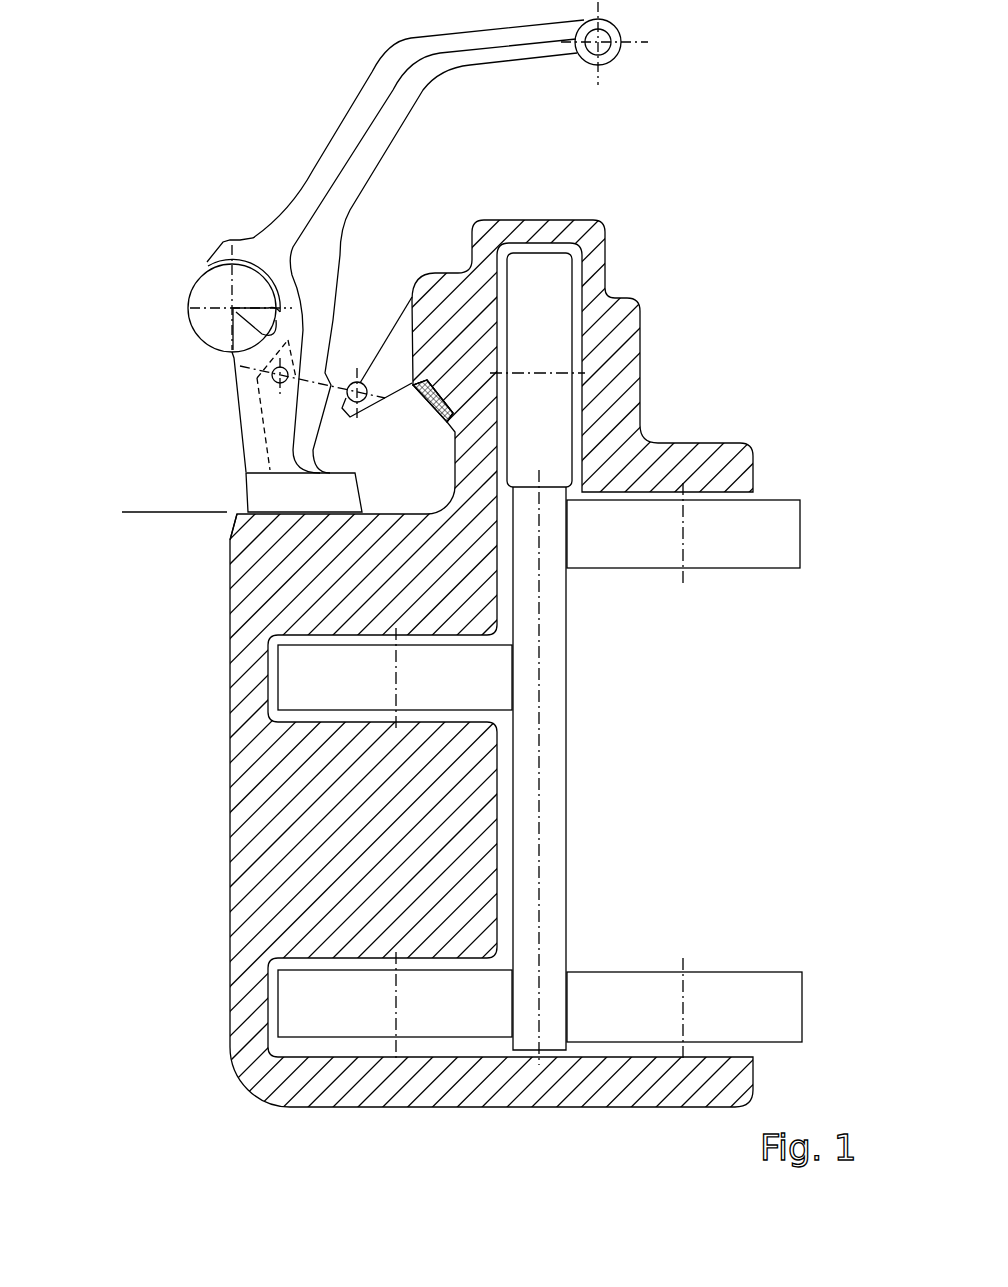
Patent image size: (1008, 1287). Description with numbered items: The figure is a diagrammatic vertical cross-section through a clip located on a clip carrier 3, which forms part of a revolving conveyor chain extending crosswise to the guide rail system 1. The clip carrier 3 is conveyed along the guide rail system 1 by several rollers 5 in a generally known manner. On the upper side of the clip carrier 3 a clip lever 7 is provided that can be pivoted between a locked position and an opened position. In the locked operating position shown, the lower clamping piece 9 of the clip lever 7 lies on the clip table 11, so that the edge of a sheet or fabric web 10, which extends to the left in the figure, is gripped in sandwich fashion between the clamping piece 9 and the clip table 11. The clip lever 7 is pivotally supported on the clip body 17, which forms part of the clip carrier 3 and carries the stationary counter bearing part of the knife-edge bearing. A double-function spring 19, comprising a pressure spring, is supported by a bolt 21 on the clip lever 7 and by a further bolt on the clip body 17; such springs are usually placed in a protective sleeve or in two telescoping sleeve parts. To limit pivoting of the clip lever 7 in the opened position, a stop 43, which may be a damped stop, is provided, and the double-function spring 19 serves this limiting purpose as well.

The guide rail system 1 is at (677, 659).
The clip carrier 3 is at (678, 258).
The rollers 5 is at (753, 533).
The clip lever 7 is at (365, 237).
The clamping piece 9 is at (220, 426).
The sheet or fabric web 10 is at (148, 470).
The clip table 11 is at (232, 533).
The clip body 17 is at (268, 925).
The double-function spring 19 is at (426, 251).
The bolt 21 is at (229, 345).
The stop 43 is at (416, 428).